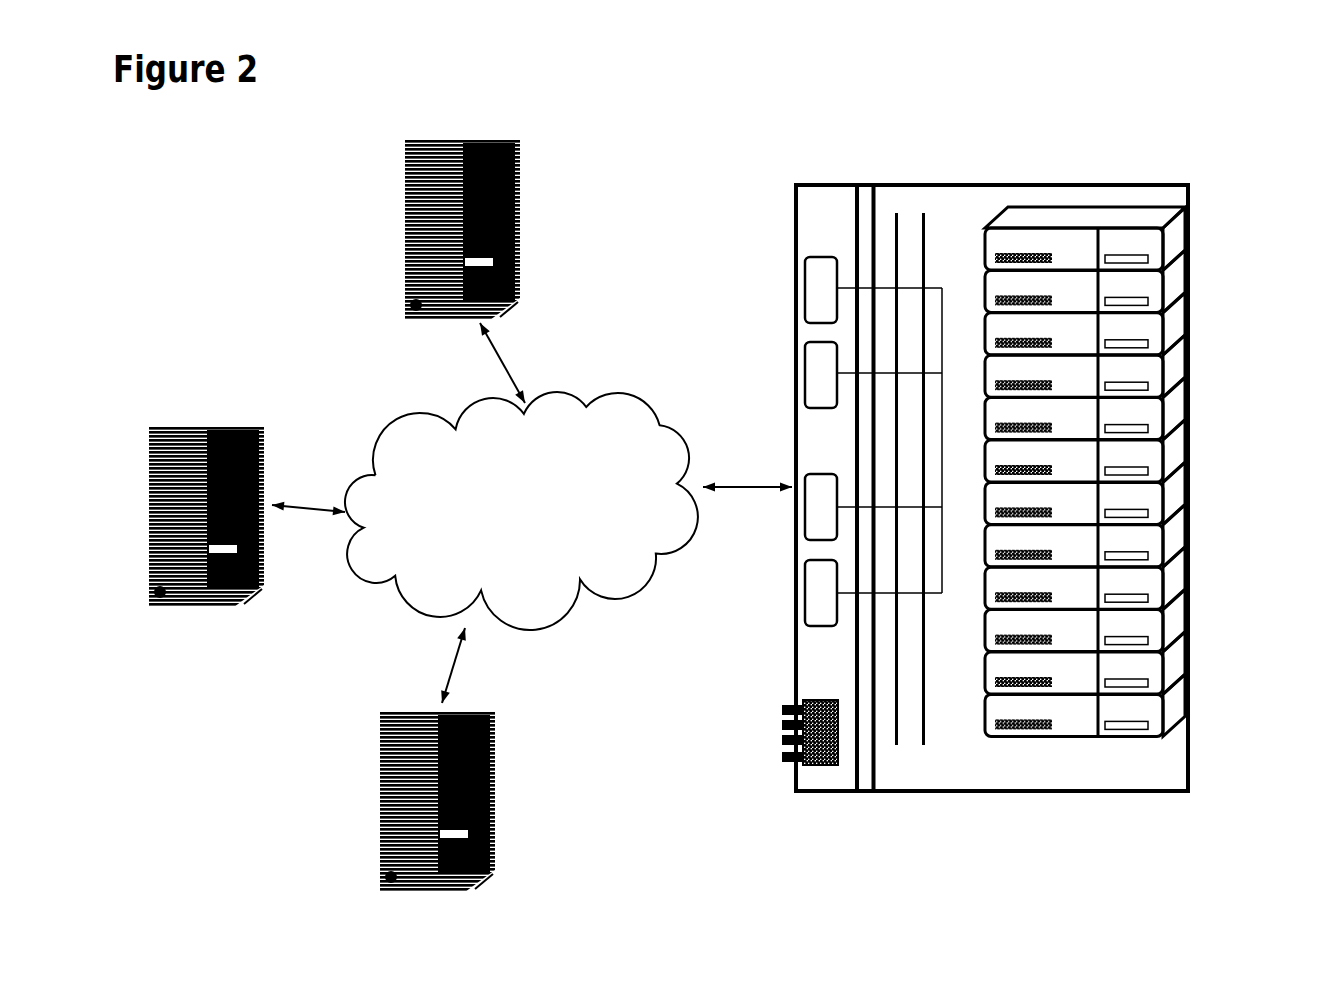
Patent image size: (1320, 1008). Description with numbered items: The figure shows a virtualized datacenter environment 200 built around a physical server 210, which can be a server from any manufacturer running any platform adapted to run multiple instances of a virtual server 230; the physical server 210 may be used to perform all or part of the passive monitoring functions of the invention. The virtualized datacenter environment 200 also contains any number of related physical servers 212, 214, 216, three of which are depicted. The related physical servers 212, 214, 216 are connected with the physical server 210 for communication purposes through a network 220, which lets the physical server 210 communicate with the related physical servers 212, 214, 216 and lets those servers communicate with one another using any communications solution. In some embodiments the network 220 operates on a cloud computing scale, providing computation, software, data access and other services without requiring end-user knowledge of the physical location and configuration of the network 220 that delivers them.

The virtualized datacenter environment 200 is at (1206, 108).
The physical server 210 is at (793, 198).
The related physical server 212 is at (405, 208).
The related physical server 214 is at (195, 425).
The related physical server 216 is at (380, 780).
The network 220 is at (521, 511).
The virtual server 230 is at (1195, 208).